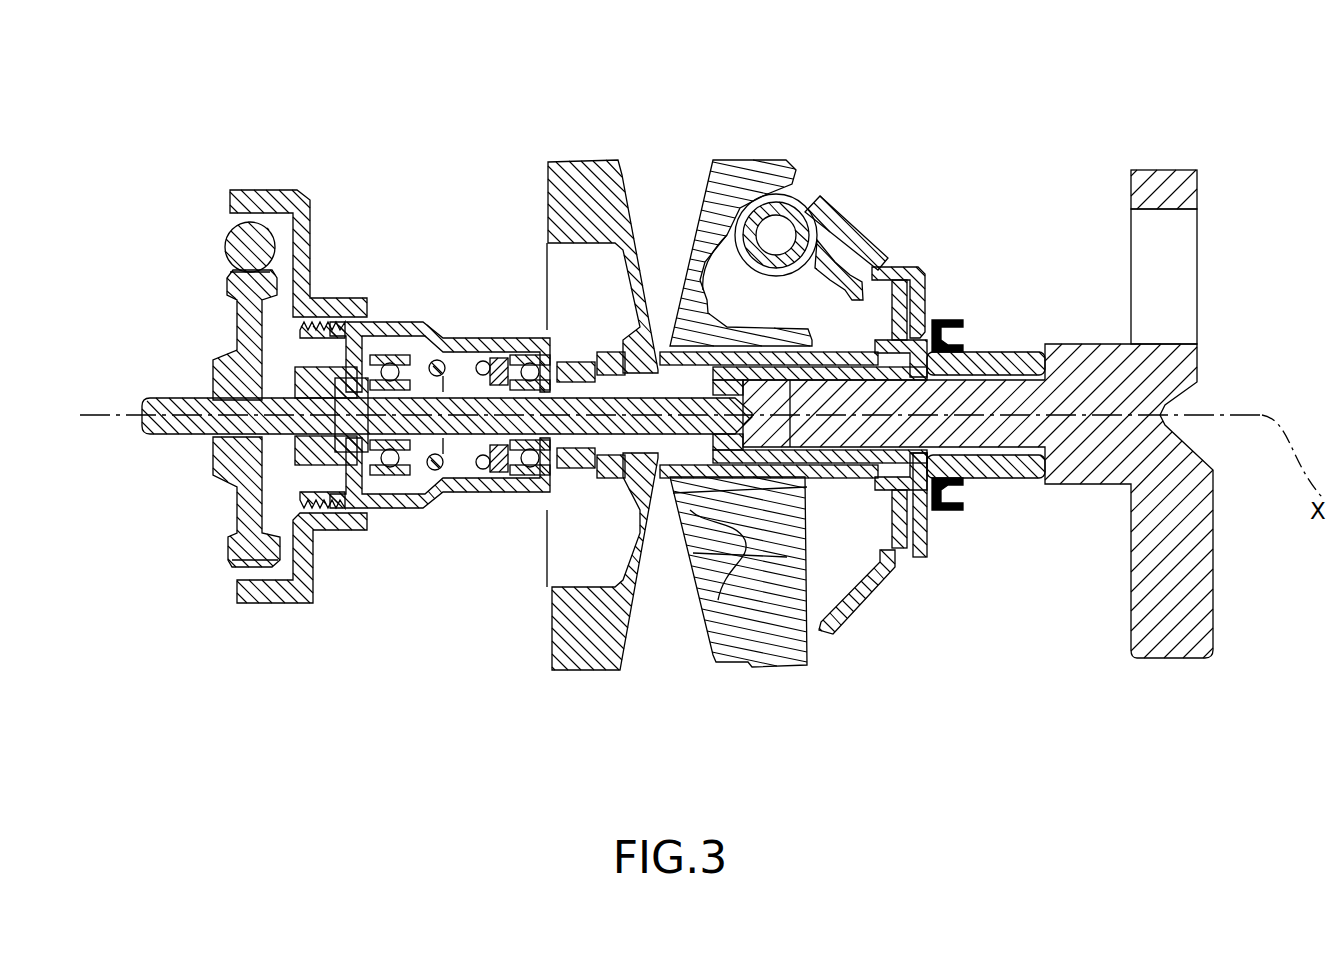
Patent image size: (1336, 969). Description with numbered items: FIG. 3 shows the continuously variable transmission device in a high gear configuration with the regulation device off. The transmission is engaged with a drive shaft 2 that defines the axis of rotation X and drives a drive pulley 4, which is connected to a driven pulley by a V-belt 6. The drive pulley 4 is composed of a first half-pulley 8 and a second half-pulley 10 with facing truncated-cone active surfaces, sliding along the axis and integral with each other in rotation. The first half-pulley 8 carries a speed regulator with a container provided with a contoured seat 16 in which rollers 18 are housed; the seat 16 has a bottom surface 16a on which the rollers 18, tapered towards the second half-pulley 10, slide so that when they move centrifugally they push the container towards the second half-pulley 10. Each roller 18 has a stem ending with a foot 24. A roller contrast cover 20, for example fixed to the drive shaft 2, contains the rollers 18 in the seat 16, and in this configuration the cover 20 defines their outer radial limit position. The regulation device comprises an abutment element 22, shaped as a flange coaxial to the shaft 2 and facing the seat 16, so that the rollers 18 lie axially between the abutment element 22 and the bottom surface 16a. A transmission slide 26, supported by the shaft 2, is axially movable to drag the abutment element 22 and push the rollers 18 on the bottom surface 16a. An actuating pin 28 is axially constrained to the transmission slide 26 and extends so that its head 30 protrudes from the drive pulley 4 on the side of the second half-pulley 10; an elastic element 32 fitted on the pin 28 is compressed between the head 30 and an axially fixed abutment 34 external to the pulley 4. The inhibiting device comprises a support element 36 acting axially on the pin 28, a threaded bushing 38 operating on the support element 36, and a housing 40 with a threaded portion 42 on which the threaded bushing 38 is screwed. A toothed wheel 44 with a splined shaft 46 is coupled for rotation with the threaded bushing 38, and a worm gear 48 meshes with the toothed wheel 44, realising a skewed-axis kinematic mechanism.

The drive shaft 2 is at (1162, 374).
The drive pulley 4 is at (530, 652).
The V-belt 6 is at (633, 175).
The first half-pulley 8 is at (738, 688).
The second half-pulley 10 is at (593, 688).
The contoured seat 16 is at (727, 238).
The bottom surface 16a is at (703, 295).
The rollers 18 is at (822, 186).
The roller contrast cover 20 is at (875, 578).
The abutment element 22 is at (927, 307).
The foot 24 is at (860, 295).
The transmission slide 26 is at (790, 385).
The actuating pin 28 is at (514, 492).
The head 30 is at (410, 512).
The elastic element 32 is at (460, 486).
The axially fixed abutment 34 is at (503, 365).
The support element 36 is at (393, 312).
The threaded bushing 38 is at (353, 303).
The housing 40 is at (417, 312).
The threaded portion 42 is at (347, 513).
The toothed wheel 44 is at (240, 468).
The splined shaft 46 is at (158, 424).
The worm gear 48 is at (243, 245).